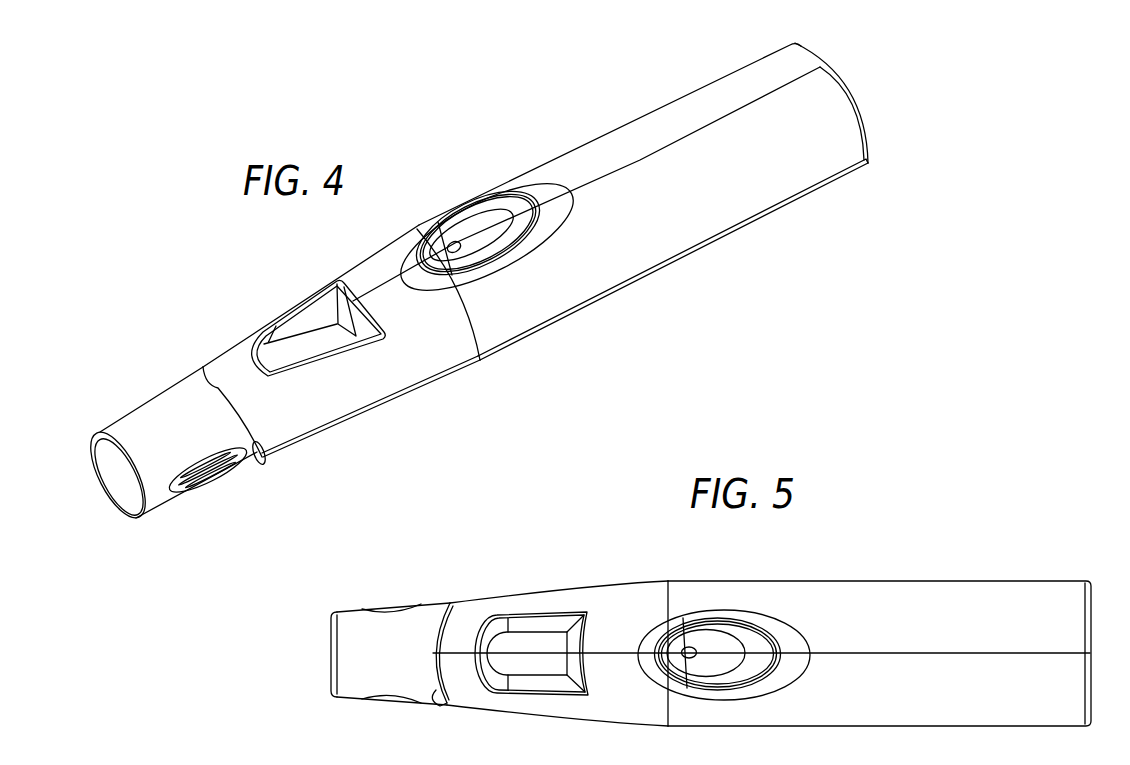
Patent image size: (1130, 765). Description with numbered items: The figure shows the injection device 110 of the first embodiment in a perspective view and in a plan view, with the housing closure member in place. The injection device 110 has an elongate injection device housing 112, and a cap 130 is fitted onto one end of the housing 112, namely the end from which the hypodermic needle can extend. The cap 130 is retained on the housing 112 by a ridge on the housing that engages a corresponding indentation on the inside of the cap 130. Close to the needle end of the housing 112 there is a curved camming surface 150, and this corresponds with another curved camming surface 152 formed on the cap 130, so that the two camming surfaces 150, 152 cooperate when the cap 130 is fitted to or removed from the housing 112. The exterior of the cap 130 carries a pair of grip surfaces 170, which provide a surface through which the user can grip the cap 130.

In FIG. 4, the injection device 110 is at (546, 129).
In FIG. 5, the injection device 110 is at (986, 546).
In FIG. 4, the injection device housing 112 is at (743, 193).
In FIG. 5, the injection device housing 112 is at (722, 598).
In FIG. 4, the cap 130 is at (147, 410).
In FIG. 5, the cap 130 is at (325, 660).
In FIG. 4, the curved camming surface 150 is at (217, 367).
In FIG. 5, the curved camming surface 150 is at (445, 623).
In FIG. 4, the curved camming surface 152 is at (257, 458).
In FIG. 5, the curved camming surface 152 is at (436, 695).
In FIG. 4, the grip surfaces 170 is at (205, 488).
In FIG. 5, the grip surfaces 170 is at (400, 603).